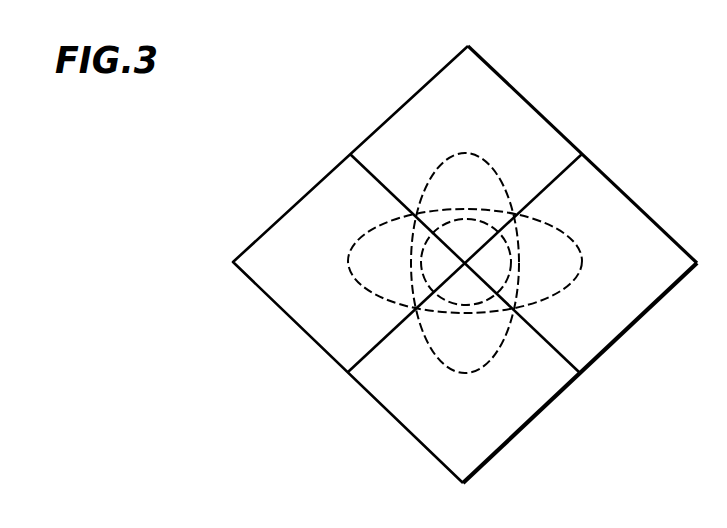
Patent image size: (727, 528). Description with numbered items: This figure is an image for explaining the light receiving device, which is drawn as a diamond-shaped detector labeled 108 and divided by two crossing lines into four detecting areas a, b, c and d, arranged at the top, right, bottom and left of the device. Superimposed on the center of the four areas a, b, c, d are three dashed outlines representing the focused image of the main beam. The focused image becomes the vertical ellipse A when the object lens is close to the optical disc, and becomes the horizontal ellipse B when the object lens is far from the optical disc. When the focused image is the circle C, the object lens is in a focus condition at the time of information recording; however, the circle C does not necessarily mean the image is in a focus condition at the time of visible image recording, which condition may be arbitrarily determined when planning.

The quadrant photodetector 108 is at (410, 99).
The vertical ellipse A is at (503, 184).
The horizontal ellipse B is at (562, 233).
The circle C is at (447, 227).
The detecting area a is at (467, 104).
The detecting area b is at (648, 263).
The detecting area c is at (462, 436).
The detecting area d is at (294, 263).